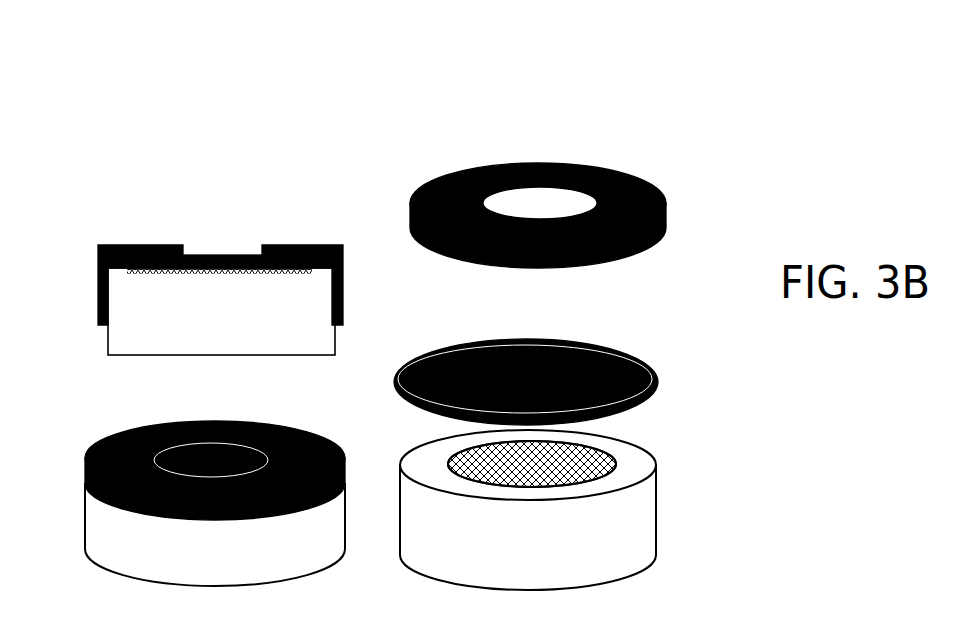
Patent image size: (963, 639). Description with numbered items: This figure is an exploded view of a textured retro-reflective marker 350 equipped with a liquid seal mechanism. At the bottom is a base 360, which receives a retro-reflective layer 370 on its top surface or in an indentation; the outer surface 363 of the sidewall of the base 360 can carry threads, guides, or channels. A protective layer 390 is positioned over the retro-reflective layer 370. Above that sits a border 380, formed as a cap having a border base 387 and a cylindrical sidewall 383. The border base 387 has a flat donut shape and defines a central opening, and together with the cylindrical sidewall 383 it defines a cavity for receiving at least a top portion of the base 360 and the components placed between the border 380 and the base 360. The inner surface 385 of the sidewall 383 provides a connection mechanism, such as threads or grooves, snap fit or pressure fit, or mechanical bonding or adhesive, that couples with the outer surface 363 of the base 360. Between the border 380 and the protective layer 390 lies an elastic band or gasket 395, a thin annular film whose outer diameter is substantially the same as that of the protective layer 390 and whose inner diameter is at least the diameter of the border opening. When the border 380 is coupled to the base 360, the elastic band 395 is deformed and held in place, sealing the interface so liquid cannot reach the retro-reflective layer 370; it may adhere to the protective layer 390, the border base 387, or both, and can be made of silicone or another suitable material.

The textured retro-reflective marker 350 is at (752, 108).
The base 360 is at (616, 541).
The outer surface of the sidewall of the base 363 is at (113, 318).
The retro-reflective layer 370 is at (587, 468).
The border 380 is at (597, 173).
The cylindrical sidewall 383 is at (668, 214).
The inner surface of the sidewall 385 is at (98, 304).
The border base 387 is at (489, 163).
The protective layer 390 is at (538, 372).
The elastic band or gasket 395 is at (659, 387).